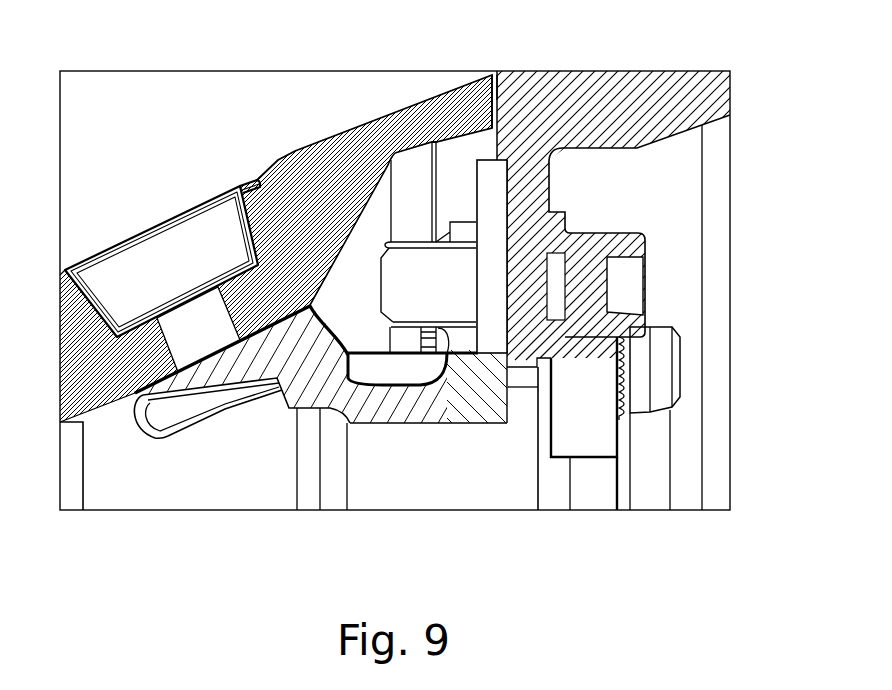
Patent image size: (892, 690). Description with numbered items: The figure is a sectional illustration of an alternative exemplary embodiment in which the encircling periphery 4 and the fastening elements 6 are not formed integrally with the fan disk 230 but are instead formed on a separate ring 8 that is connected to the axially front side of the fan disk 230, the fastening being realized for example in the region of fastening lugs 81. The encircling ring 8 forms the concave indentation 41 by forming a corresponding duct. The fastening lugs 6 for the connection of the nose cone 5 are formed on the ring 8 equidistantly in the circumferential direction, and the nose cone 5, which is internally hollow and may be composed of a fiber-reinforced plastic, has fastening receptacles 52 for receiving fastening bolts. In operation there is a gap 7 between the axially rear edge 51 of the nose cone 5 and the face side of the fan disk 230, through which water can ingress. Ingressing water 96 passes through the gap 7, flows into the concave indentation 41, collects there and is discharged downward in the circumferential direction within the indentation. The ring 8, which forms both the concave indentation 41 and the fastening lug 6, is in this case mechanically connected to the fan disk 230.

The encircling periphery 4 is at (373, 397).
The nose cone 5 is at (358, 127).
The fastening lug 6 is at (200, 400).
The gap 7 is at (498, 66).
The ring 8 is at (450, 393).
The concave indentation 41 is at (246, 187).
The axially rear edge 51 is at (498, 86).
The fastening receptacle 52 is at (157, 258).
The fastening lug 81 is at (487, 168).
The ingressing water 96 is at (363, 368).
The fan disk 230 is at (592, 110).